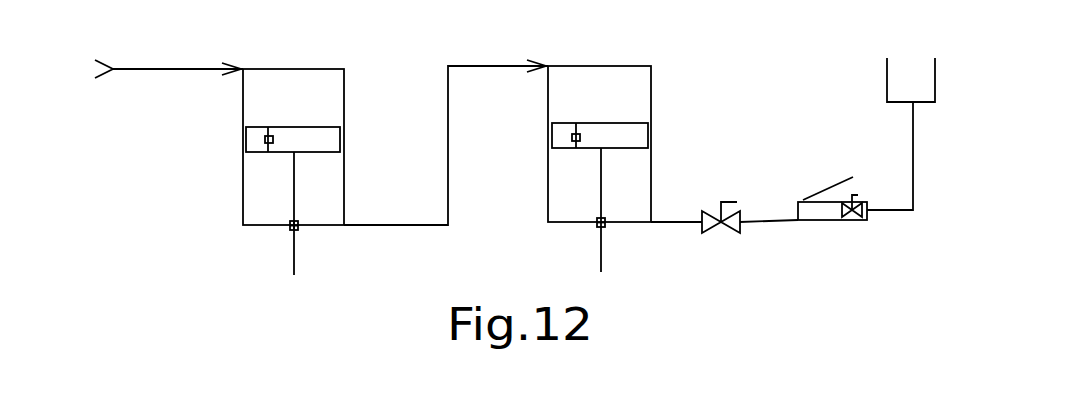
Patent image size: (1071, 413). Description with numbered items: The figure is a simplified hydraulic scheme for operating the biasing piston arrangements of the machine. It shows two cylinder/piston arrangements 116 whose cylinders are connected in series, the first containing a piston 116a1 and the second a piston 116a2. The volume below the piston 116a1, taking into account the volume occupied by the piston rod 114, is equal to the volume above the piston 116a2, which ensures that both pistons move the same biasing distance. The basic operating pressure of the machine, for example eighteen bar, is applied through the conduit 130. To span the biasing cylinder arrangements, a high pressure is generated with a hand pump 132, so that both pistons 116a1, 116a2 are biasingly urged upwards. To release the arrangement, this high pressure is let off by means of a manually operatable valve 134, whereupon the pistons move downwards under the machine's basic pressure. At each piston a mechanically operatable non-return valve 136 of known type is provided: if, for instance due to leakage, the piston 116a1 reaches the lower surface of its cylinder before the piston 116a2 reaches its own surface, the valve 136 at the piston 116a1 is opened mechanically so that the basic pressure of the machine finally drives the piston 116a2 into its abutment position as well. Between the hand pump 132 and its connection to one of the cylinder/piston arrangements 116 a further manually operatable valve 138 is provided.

The conduit 130 is at (169, 58).
The cylinder/piston arrangement 116 is at (332, 102).
The piston 116a1 is at (253, 145).
The piston 116a2 is at (637, 133).
The non-return valve 136 is at (265, 139).
The piston rod 114 is at (294, 252).
The manually operatable valve 138 is at (725, 233).
The hand pump 132 is at (820, 212).
The manually operatable valve 134 is at (852, 214).